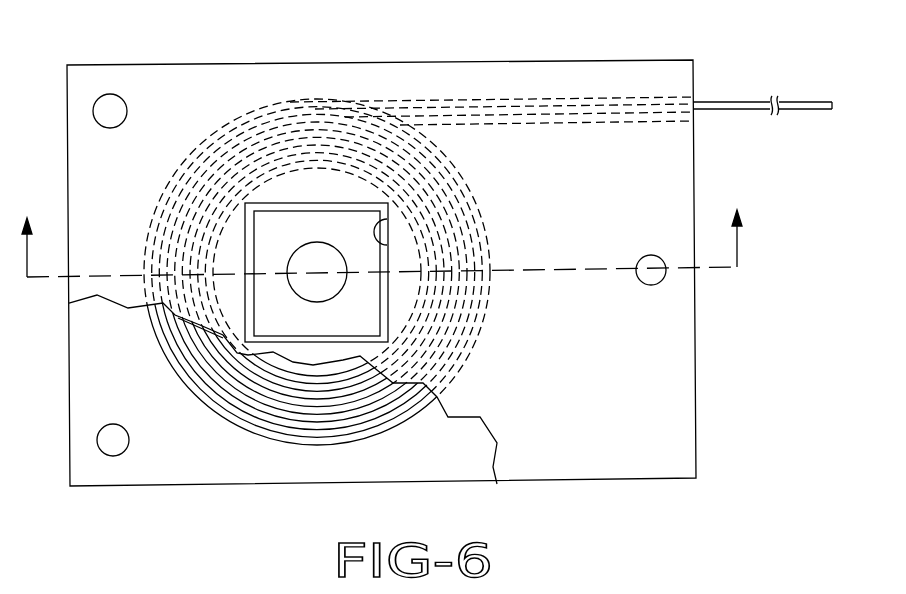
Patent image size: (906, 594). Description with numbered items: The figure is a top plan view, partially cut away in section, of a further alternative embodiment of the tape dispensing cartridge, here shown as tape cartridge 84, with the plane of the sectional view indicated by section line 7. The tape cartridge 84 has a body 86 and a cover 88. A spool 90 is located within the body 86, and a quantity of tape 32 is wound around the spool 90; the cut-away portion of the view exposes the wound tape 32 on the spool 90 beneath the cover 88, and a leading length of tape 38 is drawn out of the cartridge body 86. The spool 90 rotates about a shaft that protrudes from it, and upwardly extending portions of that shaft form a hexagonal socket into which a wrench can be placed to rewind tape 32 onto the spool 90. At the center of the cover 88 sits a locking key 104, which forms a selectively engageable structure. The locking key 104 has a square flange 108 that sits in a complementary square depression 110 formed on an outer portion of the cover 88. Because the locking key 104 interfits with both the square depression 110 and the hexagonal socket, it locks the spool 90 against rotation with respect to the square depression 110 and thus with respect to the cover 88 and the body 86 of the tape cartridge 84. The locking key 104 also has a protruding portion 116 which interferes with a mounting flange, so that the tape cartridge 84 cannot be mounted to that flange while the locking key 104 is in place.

The section line 7- 7 is at (381, 234).
The tape 32 is at (343, 412).
The lead wire 38 is at (741, 102).
The tape cartridge 84 is at (668, 510).
The body 86 is at (275, 485).
The cover 88 is at (645, 421).
The spool 90 is at (292, 380).
The locking key 104 is at (333, 220).
The square flange 108 is at (262, 208).
The square depression 110 is at (387, 219).
The protruding portion 116 is at (328, 283).